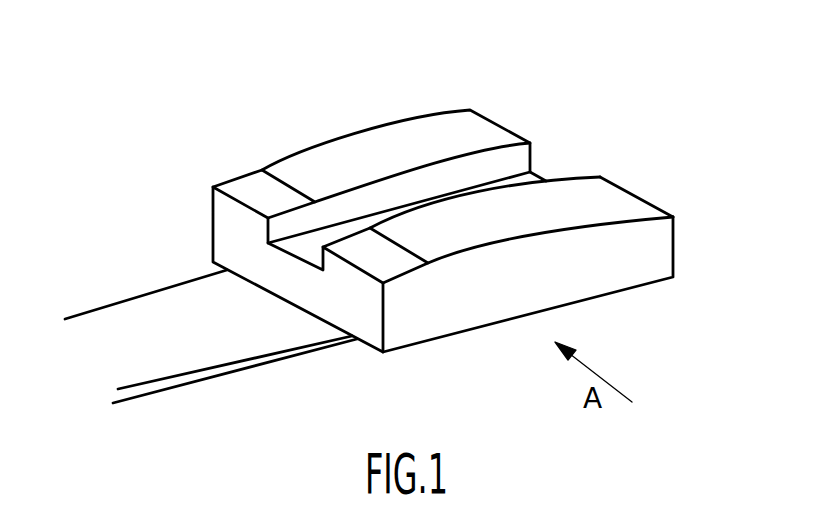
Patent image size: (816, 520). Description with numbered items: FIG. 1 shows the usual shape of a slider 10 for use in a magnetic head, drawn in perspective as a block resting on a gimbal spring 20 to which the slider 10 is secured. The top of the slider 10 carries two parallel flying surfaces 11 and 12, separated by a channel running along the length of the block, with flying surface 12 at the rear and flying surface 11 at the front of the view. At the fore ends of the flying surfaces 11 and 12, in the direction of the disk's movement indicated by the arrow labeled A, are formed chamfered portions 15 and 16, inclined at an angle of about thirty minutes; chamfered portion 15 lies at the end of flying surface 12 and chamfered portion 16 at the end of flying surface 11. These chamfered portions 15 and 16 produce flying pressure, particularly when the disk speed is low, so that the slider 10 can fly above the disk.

The slider 10 is at (538, 118).
The flying surface 11 is at (612, 204).
The flying surface 12 is at (380, 138).
The chamfered portion 15 is at (252, 192).
The chamfered portion 16 is at (388, 258).
The gimbal spring 20 is at (192, 315).